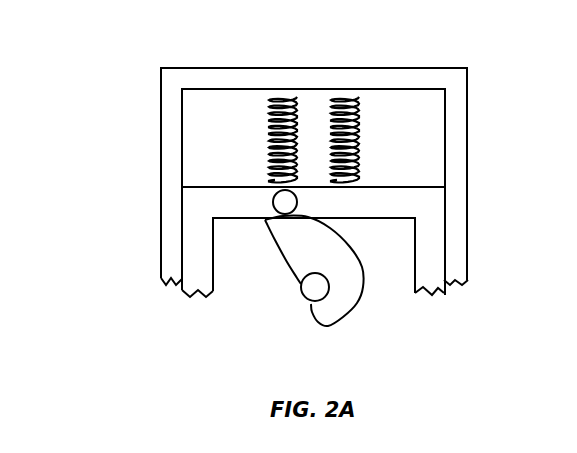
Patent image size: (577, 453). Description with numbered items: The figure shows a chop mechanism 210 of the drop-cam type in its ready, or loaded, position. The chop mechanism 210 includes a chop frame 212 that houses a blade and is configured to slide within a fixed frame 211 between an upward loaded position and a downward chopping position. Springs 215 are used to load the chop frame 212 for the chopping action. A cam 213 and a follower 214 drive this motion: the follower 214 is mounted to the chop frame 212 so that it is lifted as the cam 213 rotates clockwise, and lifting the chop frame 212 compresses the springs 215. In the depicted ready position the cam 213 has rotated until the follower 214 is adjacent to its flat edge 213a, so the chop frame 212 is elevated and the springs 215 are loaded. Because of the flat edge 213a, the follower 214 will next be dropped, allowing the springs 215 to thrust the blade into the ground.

The chop mechanism 210 is at (102, 82).
The fixed frame 211 is at (468, 137).
The chop frame 212 is at (444, 272).
The cam 213 is at (313, 284).
The flat edge 213a is at (283, 257).
The follower 214 is at (272, 201).
The springs 215 is at (267, 135).